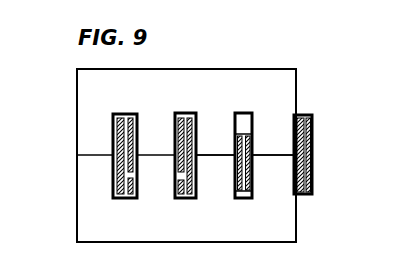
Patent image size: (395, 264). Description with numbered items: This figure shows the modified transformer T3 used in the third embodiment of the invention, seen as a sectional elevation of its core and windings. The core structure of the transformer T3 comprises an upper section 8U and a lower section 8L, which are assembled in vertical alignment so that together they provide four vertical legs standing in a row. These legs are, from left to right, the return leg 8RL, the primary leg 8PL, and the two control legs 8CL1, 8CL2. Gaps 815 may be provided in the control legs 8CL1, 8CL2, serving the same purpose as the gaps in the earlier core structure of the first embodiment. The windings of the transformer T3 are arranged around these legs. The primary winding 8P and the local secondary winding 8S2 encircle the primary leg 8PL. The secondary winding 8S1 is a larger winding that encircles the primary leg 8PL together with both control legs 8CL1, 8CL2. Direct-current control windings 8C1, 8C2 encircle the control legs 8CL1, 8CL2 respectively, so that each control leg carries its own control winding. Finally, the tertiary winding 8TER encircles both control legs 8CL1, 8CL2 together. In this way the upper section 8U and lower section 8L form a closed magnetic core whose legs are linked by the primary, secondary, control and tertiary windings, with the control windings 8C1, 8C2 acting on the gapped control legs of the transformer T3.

The modified transformer T3 is at (192, 62).
The upper section 8U is at (77, 96).
The lower section 8L is at (77, 205).
The return leg 8RL is at (105, 146).
The primary leg 8PL is at (165, 150).
The gaps 815 is at (273, 156).
The first control leg 8CL1 is at (232, 148).
The second control leg 8CL2 is at (290, 148).
The secondary winding 8S1 is at (117, 121).
The primary winding 8P is at (175, 123).
The local secondary winding 8S2 is at (137, 189).
The tertiary winding 8TER is at (198, 109).
The first direct-current control winding 8C1 is at (196, 189).
The second direct-current control winding 8C2 is at (285, 204).